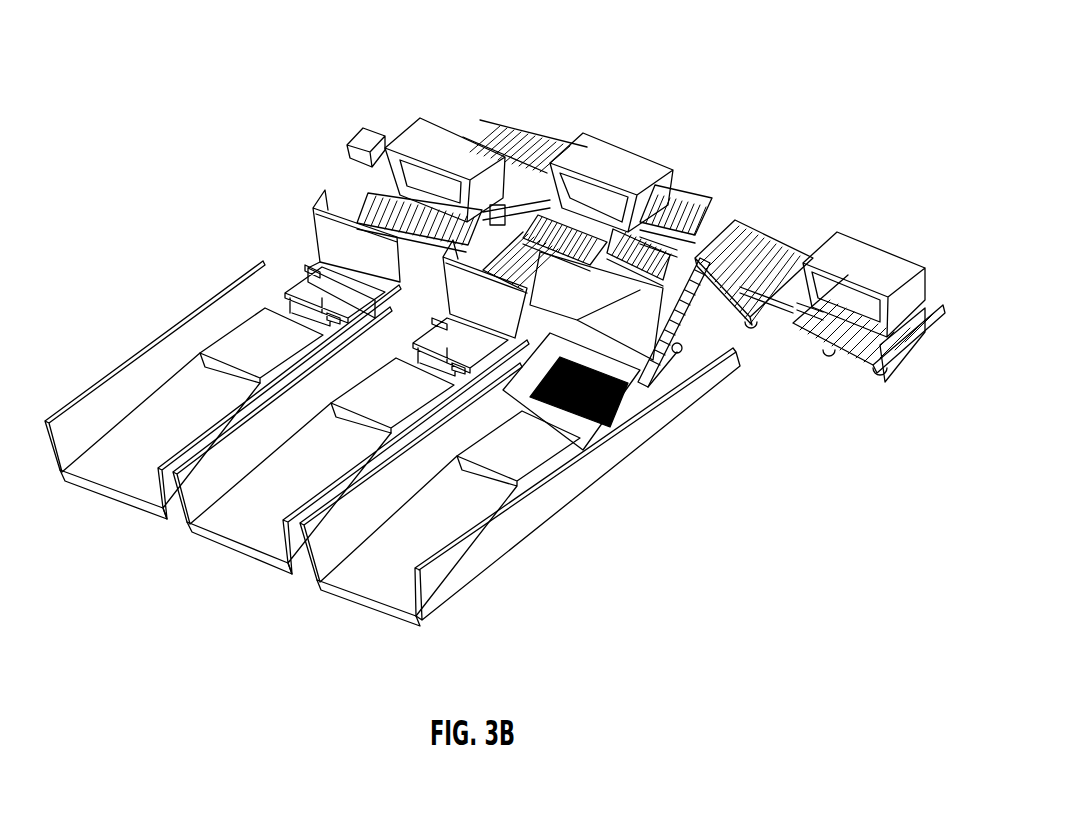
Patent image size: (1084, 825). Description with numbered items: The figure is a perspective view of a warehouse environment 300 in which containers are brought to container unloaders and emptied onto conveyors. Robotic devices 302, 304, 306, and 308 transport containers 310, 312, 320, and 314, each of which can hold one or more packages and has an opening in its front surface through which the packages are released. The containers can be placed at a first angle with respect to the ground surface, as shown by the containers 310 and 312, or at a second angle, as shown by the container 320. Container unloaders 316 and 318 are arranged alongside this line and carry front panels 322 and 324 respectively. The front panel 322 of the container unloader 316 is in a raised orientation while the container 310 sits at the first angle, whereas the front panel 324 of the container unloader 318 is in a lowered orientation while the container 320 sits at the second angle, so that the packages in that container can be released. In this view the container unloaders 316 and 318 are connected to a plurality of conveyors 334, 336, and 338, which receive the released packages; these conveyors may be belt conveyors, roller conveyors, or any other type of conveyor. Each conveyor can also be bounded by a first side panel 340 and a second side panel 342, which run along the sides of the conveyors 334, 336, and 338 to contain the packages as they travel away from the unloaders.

The warehouse environment 300 is at (183, 132).
The robotic device 302 is at (525, 145).
The robotic device 304 is at (685, 199).
The robotic device 306 is at (733, 274).
The robotic device 308 is at (848, 357).
The container 310 is at (450, 148).
The container 312 is at (632, 162).
The container 314 is at (868, 268).
The container unloader 316 is at (396, 213).
The container unloader 318 is at (660, 283).
The container 320 is at (603, 303).
The front panel 322 is at (355, 247).
The front panel 324 is at (607, 426).
The conveyor 334 is at (150, 449).
The conveyor 336 is at (273, 497).
The conveyor 338 is at (393, 543).
The first side panel 340 is at (363, 502).
The second side panel 342 is at (490, 530).